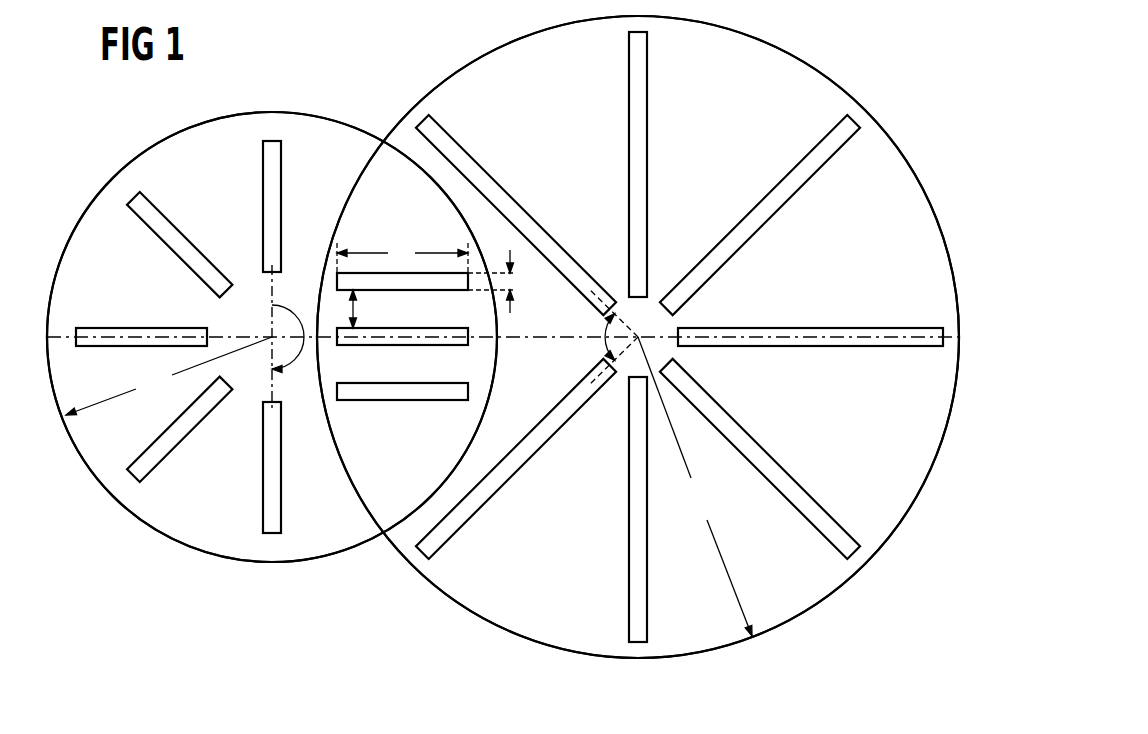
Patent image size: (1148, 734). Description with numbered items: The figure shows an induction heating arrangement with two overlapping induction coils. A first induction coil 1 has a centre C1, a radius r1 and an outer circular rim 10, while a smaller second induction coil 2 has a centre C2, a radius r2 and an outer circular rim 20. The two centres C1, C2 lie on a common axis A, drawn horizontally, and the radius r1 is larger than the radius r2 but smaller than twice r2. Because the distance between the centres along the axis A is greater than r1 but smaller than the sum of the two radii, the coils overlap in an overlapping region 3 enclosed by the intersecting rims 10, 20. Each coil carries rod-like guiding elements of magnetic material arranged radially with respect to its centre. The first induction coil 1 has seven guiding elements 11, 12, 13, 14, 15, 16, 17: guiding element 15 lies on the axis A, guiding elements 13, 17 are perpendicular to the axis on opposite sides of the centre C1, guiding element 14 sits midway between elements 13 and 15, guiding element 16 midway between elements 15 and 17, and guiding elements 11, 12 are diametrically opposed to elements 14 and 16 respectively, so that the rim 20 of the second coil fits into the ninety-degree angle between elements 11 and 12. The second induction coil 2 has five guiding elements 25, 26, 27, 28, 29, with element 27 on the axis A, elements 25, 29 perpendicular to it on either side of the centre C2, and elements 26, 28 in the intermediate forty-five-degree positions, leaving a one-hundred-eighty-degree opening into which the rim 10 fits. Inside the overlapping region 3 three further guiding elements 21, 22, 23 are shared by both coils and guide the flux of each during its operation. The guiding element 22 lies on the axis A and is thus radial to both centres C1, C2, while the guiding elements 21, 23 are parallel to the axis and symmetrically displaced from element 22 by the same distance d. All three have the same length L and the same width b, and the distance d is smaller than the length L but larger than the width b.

The first induction coil 1 is at (452, 598).
The second induction coil 2 is at (140, 520).
The overlapping region 3 is at (383, 470).
The outer circular rim 10 is at (806, 63).
The guiding element 11 is at (470, 522).
The guiding element 12 is at (463, 148).
The guiding element 13 is at (628, 110).
The guiding element 14 is at (810, 152).
The guiding element 15 is at (843, 327).
The guiding element 16 is at (810, 524).
The guiding element 17 is at (628, 582).
The outer circular rim 20 is at (322, 118).
The guiding element 21 is at (385, 401).
The guiding element 22 is at (400, 346).
The guiding element 23 is at (400, 291).
The guiding element 25 is at (264, 480).
The guiding element 26 is at (165, 432).
The guiding element 27 is at (150, 328).
The guiding element 28 is at (160, 236).
The guiding element 29 is at (264, 188).
The axis A is at (748, 327).
The centre C1 is at (638, 337).
The centre C2 is at (272, 337).
The radius r1 is at (695, 486).
The radius r2 is at (169, 376).
The length L is at (402, 254).
The width b is at (502, 281).
The distance d is at (364, 309).